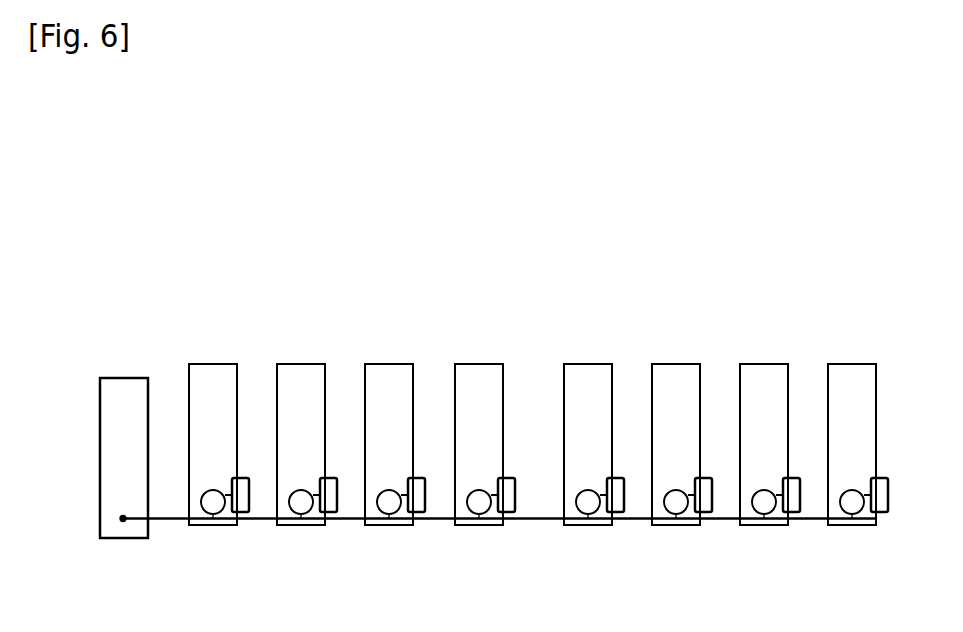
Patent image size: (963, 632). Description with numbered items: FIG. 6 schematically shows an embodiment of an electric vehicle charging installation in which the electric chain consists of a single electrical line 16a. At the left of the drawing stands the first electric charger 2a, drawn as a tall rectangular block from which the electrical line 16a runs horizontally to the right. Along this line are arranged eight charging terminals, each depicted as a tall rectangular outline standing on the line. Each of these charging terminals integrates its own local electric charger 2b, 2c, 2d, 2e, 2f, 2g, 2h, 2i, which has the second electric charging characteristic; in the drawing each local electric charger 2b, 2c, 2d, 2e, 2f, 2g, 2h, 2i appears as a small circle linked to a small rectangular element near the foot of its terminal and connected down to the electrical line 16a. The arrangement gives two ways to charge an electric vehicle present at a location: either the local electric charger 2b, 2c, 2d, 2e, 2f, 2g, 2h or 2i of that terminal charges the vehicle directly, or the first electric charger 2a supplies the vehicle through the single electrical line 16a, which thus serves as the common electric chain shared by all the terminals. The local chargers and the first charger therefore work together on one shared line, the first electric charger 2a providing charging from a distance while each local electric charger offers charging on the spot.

The first electric charger 2a is at (122, 377).
The local electric charger 2b is at (241, 478).
The local electric charger 2c is at (329, 478).
The local electric charger 2d is at (417, 478).
The local electric charger 2e is at (507, 478).
The local electric charger 2f is at (616, 478).
The local electric charger 2g is at (704, 478).
The local electric charger 2h is at (792, 478).
The local electric charger 2i is at (880, 478).
The electrical line 16a is at (535, 522).